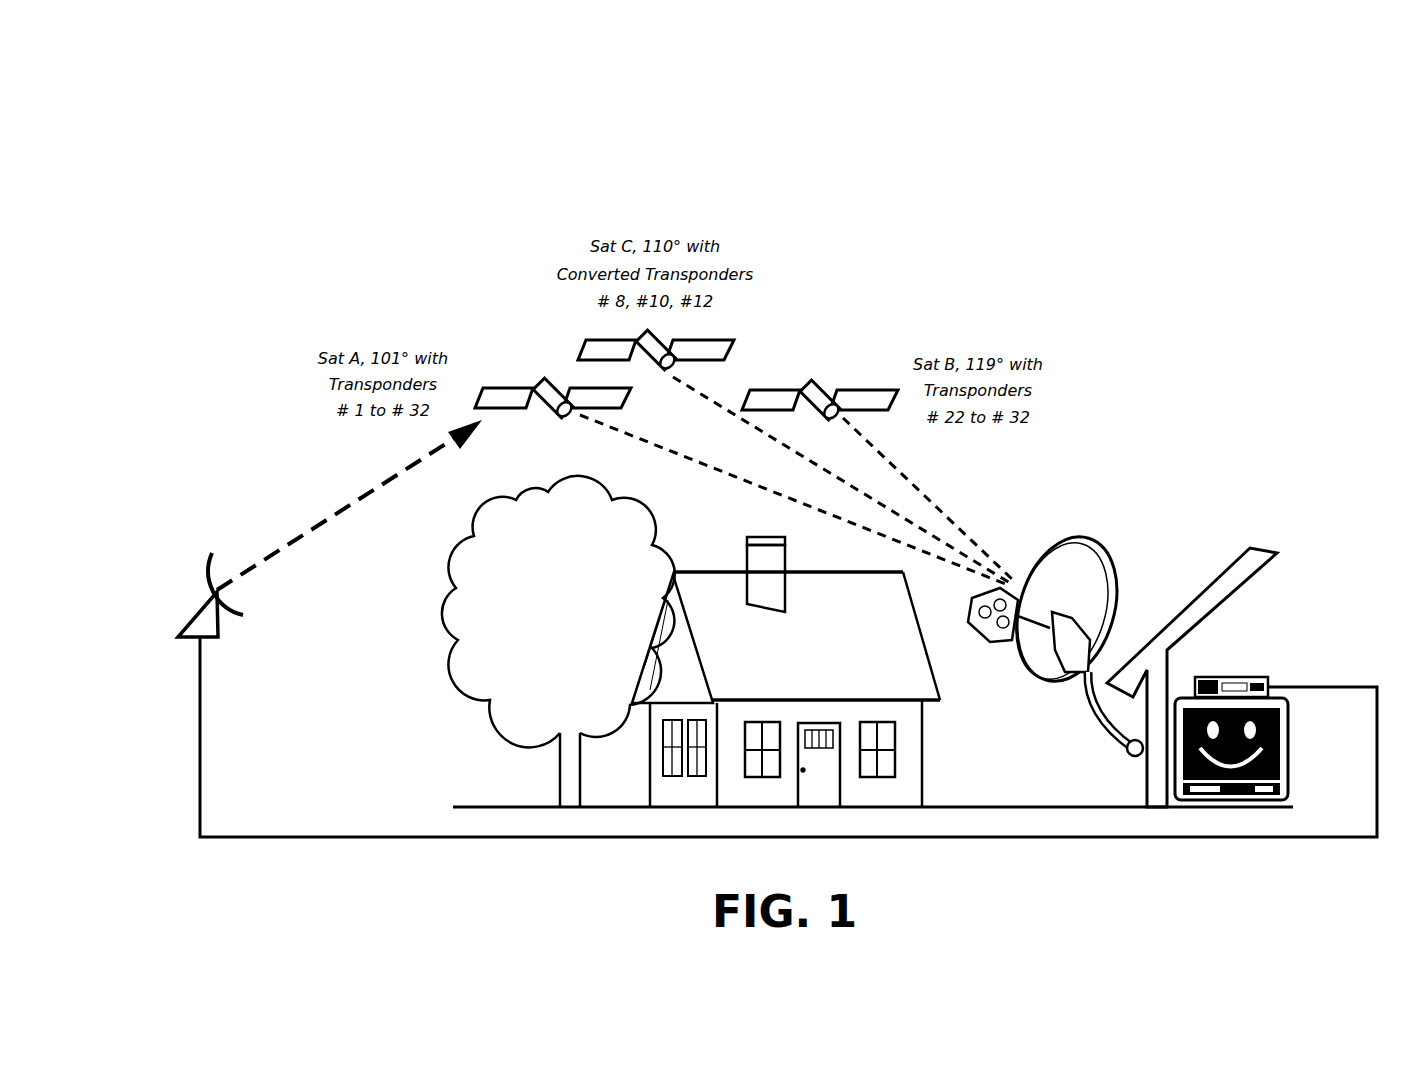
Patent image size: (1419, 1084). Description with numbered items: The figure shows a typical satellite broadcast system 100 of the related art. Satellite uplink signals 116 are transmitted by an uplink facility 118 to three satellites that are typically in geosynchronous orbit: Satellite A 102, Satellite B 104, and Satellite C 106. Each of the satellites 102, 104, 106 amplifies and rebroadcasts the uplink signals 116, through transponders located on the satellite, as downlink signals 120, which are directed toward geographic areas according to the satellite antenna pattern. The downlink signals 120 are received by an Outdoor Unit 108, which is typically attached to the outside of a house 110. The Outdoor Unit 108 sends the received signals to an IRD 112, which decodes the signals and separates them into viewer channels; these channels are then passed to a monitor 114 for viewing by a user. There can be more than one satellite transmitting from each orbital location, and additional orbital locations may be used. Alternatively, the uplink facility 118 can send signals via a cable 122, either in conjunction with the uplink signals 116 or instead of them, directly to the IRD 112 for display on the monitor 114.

The system 100 is at (778, 172).
The Satellite A 102 is at (549, 376).
The Satellite B 104 is at (840, 384).
The Satellite C 106 is at (699, 340).
The Outdoor Unit (ODU) 108 is at (1080, 538).
The house 110 is at (1217, 576).
The IRD 112 is at (1230, 680).
The monitor 114 is at (1289, 738).
The satellite uplink signals 116 is at (350, 498).
The uplink facility 118 is at (200, 608).
The downlink signals 120 is at (962, 523).
The cable 122 is at (1310, 688).